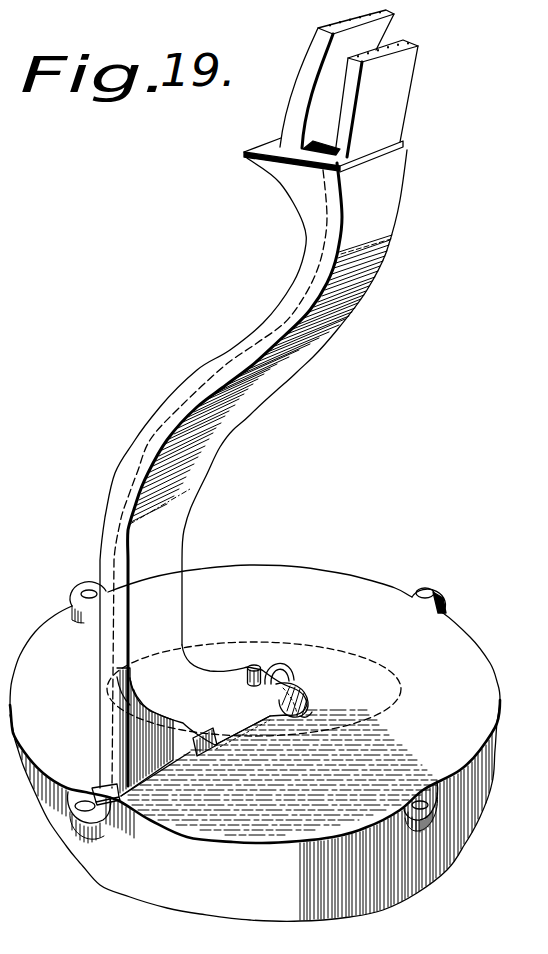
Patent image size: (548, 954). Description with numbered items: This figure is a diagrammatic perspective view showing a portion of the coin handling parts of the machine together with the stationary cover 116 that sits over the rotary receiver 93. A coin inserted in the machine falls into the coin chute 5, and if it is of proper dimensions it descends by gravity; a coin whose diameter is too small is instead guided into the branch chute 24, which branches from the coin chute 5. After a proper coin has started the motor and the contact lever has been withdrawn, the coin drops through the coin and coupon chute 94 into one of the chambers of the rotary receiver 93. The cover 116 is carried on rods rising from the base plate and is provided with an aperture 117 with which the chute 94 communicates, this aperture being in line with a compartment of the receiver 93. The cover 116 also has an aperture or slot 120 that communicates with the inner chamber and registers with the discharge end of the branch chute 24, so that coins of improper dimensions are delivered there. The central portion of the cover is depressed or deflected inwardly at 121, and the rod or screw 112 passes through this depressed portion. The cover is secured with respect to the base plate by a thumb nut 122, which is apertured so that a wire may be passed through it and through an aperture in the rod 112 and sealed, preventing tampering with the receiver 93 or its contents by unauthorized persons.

The coin chute 5 is at (291, 108).
The branch of the chute 24 is at (388, 108).
The rotary receiver 93 is at (255, 743).
The coin and coupon chute 94 is at (124, 452).
The rod or screw 112 is at (256, 665).
The stationary cover 116 is at (283, 689).
The aperture 117 is at (96, 787).
The aperture or slot 120 is at (308, 713).
The depressed central portion 121 is at (305, 690).
The thumb nut 122 is at (281, 672).